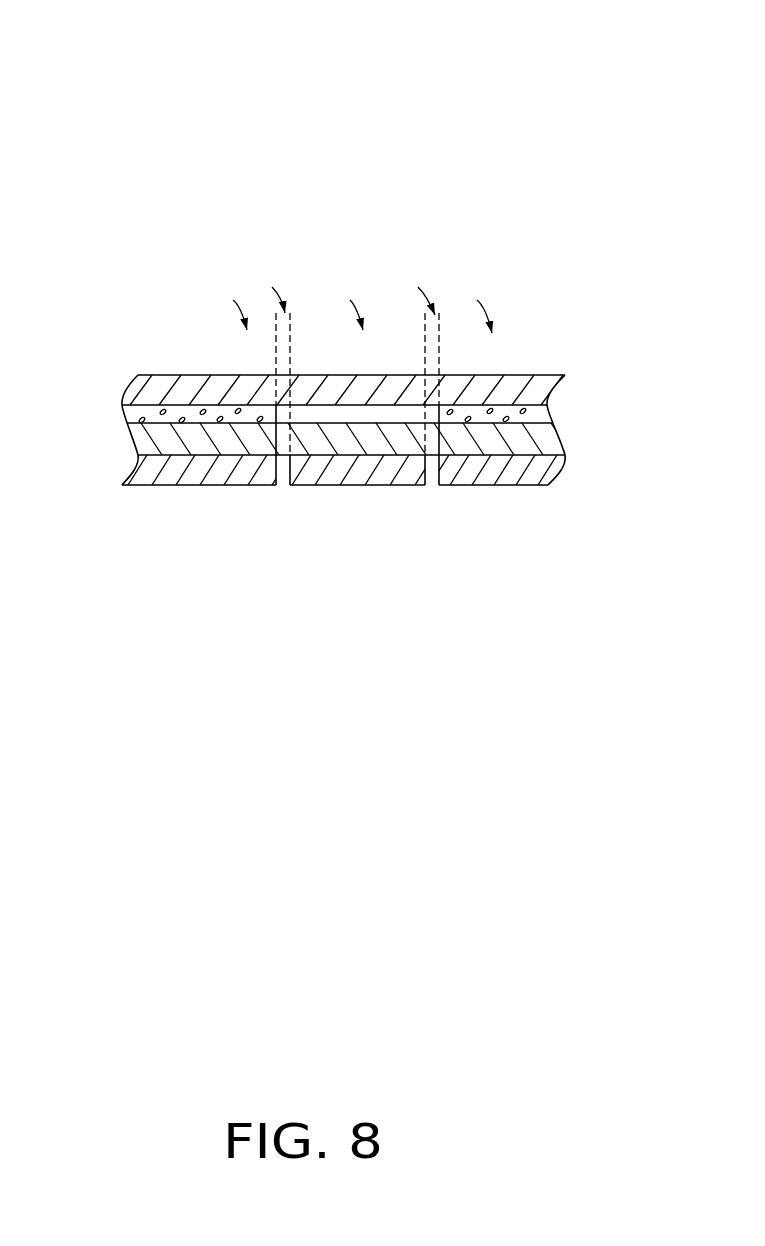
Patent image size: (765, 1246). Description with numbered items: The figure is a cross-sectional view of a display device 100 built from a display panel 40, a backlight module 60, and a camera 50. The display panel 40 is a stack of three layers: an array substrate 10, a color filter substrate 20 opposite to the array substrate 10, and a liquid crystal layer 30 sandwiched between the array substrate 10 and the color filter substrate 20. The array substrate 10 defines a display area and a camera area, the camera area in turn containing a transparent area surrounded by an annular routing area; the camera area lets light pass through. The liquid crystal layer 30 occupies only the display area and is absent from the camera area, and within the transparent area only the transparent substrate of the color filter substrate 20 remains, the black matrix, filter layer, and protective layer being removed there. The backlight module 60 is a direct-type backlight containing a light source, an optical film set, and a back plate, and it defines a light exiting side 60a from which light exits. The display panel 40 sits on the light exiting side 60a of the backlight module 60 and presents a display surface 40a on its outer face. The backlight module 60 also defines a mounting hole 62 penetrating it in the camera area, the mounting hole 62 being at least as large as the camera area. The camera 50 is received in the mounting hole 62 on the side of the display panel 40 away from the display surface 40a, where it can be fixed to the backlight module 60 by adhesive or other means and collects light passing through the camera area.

The display device 100 is at (427, 78).
The array substrate 10 is at (550, 443).
The color filter substrate 20 is at (538, 385).
The liquid crystal layer 30 is at (540, 418).
The display panel 40 is at (642, 352).
The display surface 40a is at (524, 373).
The camera 50 is at (378, 472).
The backlight module 60 is at (537, 465).
The light exiting side 60a is at (157, 451).
The mounting hole 62 is at (283, 479).